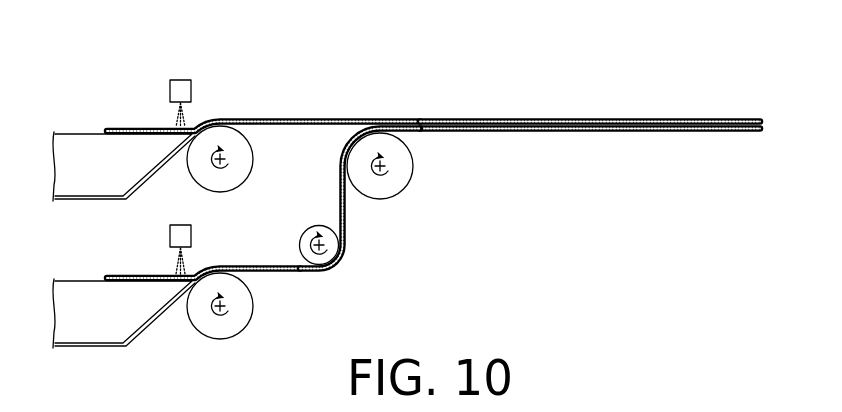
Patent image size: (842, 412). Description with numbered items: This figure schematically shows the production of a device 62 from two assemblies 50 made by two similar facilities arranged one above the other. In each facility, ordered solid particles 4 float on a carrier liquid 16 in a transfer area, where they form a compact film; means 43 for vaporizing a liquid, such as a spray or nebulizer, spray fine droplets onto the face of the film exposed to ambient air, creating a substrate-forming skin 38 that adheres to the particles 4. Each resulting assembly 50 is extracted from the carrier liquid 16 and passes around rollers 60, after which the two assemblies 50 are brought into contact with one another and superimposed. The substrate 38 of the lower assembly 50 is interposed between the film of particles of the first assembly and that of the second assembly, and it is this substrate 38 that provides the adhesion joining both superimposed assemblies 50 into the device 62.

The particles 4 is at (122, 128).
The carrier liquid 16 is at (105, 185).
The substrate-forming skin 38 is at (356, 118).
The means for vaporizing a liquid 43 is at (178, 80).
The assembly 50 is at (281, 109).
The rollers 60 is at (402, 168).
The device 62 is at (531, 77).